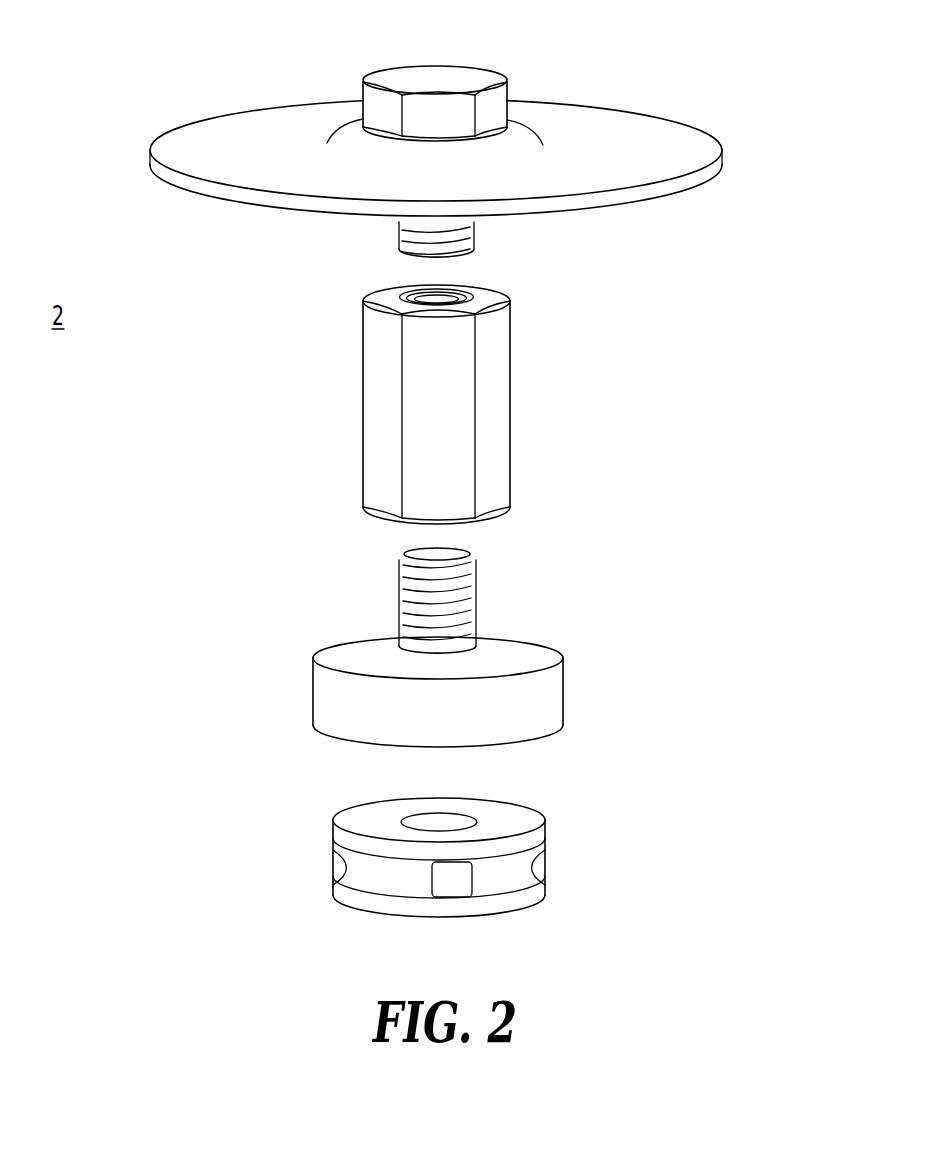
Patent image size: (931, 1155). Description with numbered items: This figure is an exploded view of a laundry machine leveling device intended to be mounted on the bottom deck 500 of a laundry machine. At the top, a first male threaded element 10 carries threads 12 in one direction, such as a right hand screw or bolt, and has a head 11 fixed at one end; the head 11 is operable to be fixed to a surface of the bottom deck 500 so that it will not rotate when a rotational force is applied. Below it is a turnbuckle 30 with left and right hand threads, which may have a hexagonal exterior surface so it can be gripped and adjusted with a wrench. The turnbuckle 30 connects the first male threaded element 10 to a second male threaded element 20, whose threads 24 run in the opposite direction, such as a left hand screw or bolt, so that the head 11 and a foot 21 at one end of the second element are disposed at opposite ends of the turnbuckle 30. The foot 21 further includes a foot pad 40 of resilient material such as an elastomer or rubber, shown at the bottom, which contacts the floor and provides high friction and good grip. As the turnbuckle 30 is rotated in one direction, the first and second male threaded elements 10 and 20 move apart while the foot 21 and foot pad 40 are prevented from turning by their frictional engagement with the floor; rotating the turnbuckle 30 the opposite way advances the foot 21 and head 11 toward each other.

The first male threaded element 10 is at (435, 78).
The head 11 is at (497, 95).
The threads 12 is at (473, 237).
The bottom deck 500 is at (690, 148).
The turnbuckle 30 is at (488, 412).
The threads 24 is at (465, 612).
The foot 21 is at (527, 653).
The second male threaded element 20 is at (538, 707).
The foot pad 40 is at (545, 836).